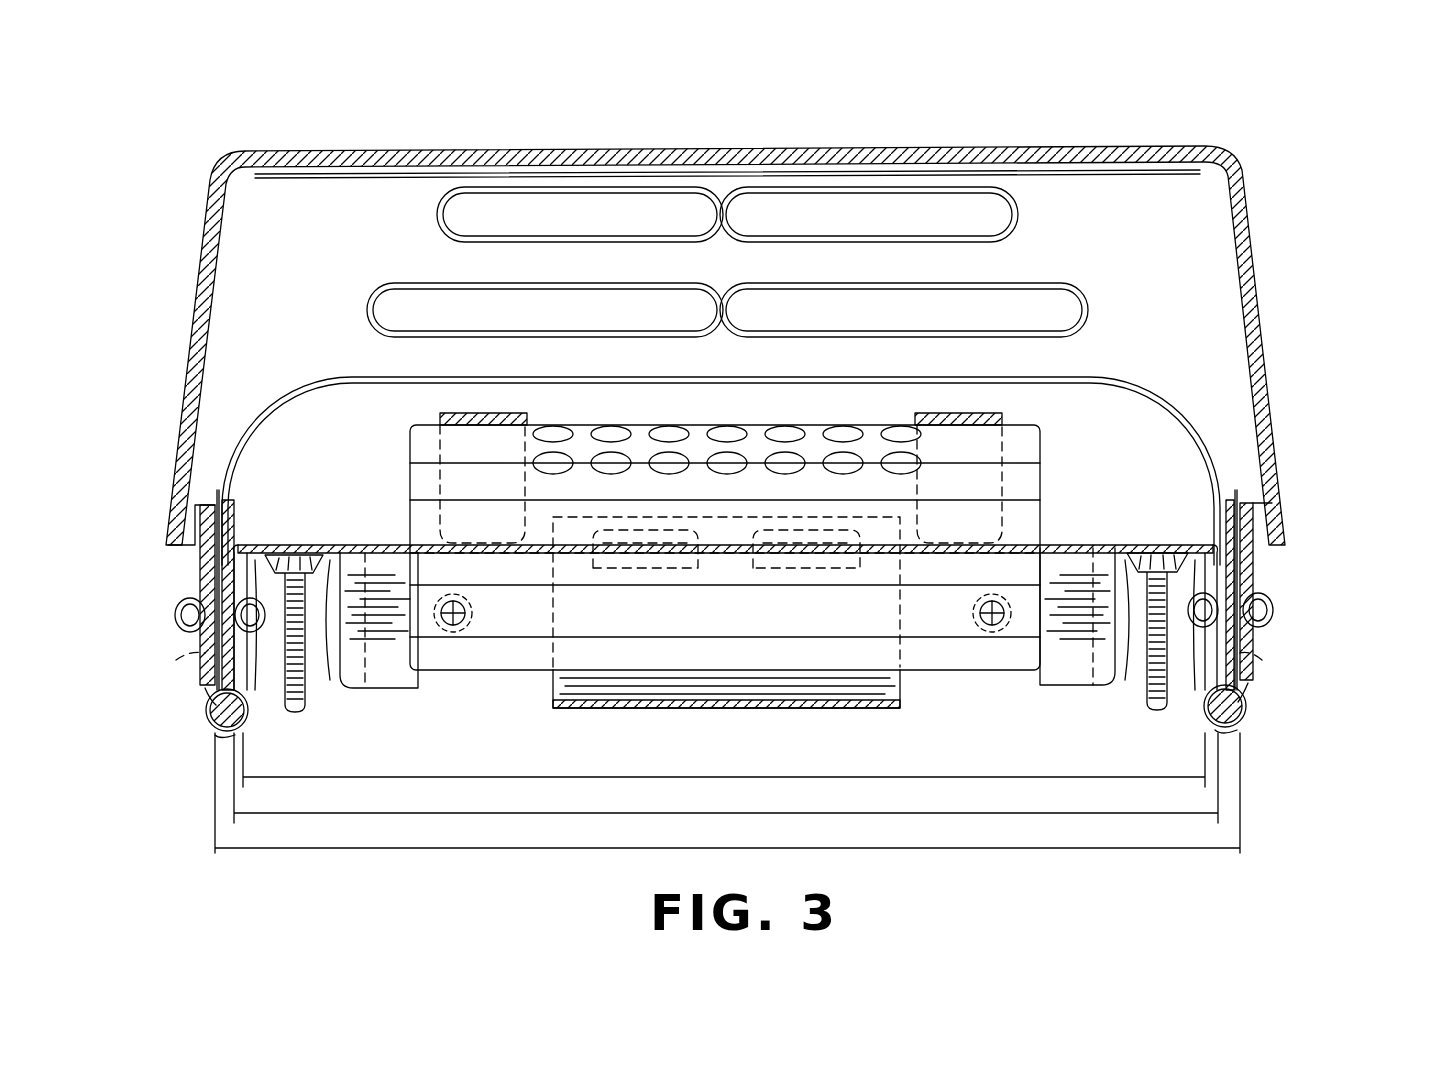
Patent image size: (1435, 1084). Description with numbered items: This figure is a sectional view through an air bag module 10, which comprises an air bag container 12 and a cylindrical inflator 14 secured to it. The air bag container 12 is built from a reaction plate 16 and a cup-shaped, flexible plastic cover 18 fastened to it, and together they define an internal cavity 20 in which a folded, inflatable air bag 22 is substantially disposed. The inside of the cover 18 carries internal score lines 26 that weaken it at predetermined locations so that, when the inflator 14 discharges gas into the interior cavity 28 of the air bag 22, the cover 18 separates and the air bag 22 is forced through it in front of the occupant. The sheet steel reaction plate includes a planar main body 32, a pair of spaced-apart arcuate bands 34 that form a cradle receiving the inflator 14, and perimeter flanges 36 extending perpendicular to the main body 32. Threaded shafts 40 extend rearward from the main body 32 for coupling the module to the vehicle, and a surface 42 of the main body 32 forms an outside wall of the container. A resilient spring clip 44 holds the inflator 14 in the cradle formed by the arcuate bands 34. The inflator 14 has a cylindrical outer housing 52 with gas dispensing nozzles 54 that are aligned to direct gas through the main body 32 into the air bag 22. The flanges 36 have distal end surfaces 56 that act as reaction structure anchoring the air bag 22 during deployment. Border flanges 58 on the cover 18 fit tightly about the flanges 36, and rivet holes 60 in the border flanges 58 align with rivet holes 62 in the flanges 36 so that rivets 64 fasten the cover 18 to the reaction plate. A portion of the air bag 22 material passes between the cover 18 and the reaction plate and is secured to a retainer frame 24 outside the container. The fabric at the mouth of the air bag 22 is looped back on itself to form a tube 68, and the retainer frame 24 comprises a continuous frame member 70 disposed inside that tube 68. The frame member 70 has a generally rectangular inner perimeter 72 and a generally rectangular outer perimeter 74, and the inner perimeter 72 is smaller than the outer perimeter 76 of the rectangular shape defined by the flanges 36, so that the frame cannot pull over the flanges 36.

The air bag module 10 is at (1250, 135).
The air bag container 12 is at (1297, 494).
The cylindrical inflator 14 is at (950, 645).
The reaction plate 16 is at (1105, 538).
The cover 18 is at (1272, 390).
The internal cavity 20 is at (1165, 258).
The inflatable air bag 22 is at (1020, 198).
The retainer frame 24 is at (208, 710).
The internal score lines 26 is at (660, 165).
The interior cavity 28 is at (280, 446).
The planar main body 32 is at (366, 545).
The arcuate bands 34 is at (462, 412).
The flanges 36 is at (296, 702).
The threaded shafts 40 is at (340, 690).
The surface of the main body 42 is at (357, 662).
The spring clip 44 is at (660, 704).
The cylindrical outer housing 52 is at (515, 620).
The gas dispensing nozzles 54 is at (728, 430).
The distal end surfaces 56 is at (246, 700).
The border flanges 58 is at (205, 578).
The rivet holes 60 is at (200, 655).
The rivet holes 62 is at (455, 632).
The rivets 64 is at (175, 615).
The fabric tube 68 is at (224, 746).
The continuous frame member 70 is at (216, 726).
The inner perimeter 72 is at (762, 772).
The outer perimeter 74 is at (607, 846).
The outer perimeter of the flanges 76 is at (677, 810).